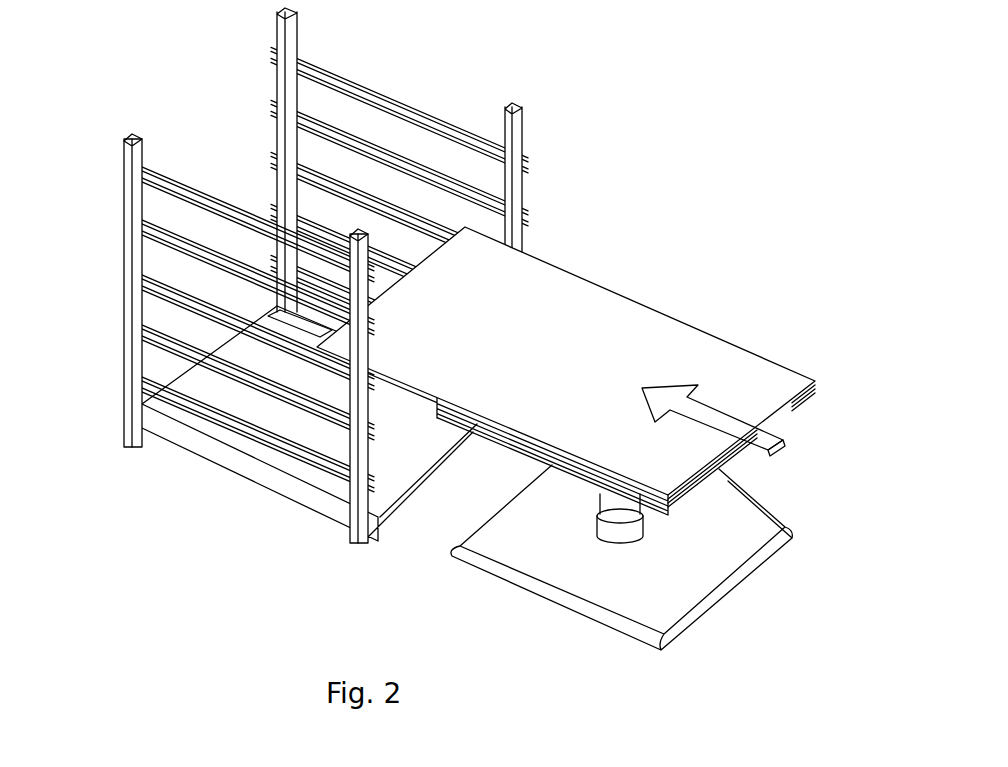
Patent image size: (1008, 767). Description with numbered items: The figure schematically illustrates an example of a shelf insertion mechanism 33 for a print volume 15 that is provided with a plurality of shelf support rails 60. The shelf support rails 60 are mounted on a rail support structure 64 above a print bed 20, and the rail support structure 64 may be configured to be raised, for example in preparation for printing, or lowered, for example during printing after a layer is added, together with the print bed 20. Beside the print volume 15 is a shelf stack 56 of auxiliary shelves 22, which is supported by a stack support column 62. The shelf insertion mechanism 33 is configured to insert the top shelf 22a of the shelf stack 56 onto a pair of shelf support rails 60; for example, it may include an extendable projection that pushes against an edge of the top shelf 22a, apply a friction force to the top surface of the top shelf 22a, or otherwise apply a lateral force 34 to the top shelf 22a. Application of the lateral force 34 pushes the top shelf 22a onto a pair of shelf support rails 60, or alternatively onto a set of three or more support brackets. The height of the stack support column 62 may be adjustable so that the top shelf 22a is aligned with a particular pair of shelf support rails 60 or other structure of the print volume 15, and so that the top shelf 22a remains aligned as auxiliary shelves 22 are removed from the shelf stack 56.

The print volume 15 is at (152, 86).
The print bed 20 is at (255, 465).
The auxiliary shelves 22 is at (817, 388).
The top shelf 22a is at (550, 300).
The shelf insertion mechanism 33 is at (773, 245).
The lateral force 34 is at (759, 447).
The shelf stack 56 is at (808, 432).
The shelf support rails 60 is at (157, 330).
The stack support column 62 is at (613, 498).
The rail support structure 64 is at (515, 138).